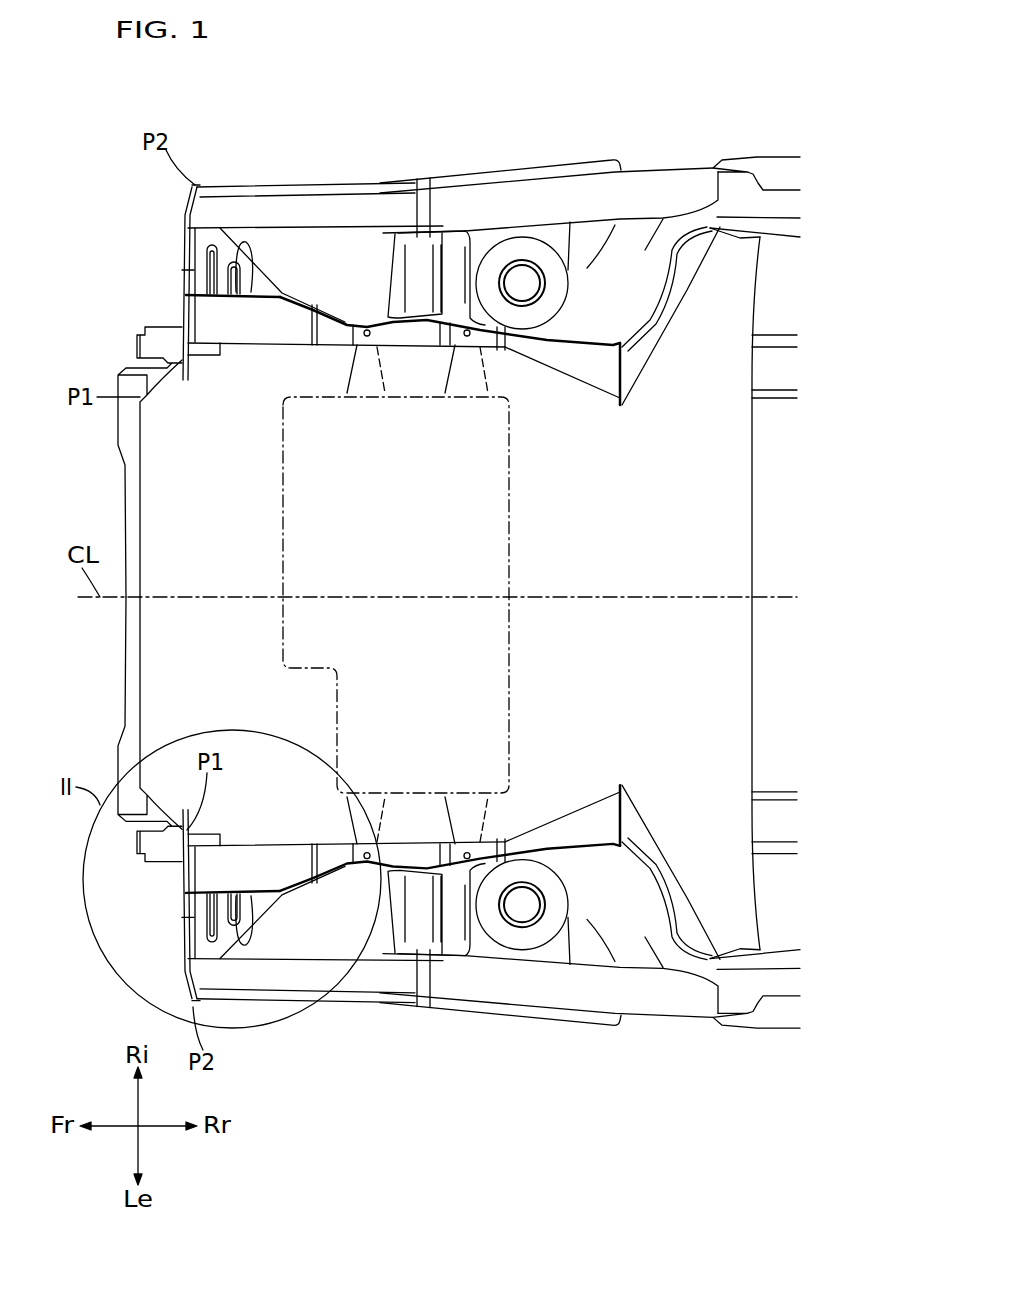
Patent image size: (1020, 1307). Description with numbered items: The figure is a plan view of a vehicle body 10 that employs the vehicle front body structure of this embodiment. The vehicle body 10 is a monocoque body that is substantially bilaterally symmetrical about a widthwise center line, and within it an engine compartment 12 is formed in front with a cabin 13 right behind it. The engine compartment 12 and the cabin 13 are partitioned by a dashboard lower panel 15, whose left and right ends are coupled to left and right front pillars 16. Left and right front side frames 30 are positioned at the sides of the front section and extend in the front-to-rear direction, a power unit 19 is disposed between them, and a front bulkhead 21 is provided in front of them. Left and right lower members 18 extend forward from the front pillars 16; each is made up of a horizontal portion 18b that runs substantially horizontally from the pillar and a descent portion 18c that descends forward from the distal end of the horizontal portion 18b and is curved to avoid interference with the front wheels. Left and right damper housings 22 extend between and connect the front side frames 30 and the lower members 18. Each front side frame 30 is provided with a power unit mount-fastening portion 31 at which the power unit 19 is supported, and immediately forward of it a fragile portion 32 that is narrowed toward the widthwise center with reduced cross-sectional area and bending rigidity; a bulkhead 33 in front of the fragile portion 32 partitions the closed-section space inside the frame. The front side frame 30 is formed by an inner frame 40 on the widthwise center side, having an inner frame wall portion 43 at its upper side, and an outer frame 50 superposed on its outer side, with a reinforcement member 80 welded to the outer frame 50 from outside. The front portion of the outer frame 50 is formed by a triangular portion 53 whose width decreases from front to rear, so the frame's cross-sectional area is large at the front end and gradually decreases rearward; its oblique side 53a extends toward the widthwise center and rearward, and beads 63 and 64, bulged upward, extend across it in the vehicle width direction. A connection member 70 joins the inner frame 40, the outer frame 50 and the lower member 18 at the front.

The vehicle body 10 is at (137, 113).
The engine compartment 12 is at (587, 685).
The cabin 13 is at (815, 685).
The dashboard lower panel 15 is at (752, 485).
The front pillar 16 is at (784, 176).
The lower member 18 is at (528, 100).
The horizontal portion 18b is at (463, 180).
The descent portion 18c is at (413, 180).
The power unit 19 is at (509, 485).
The front bulkhead 21 is at (118, 427).
The damper housing 22 is at (668, 218).
The front side frame 30 is at (297, 100).
The power unit mount-fastening portion 31 is at (377, 320).
The fragile portion 32 is at (352, 345).
The bulkhead 33 is at (315, 340).
The inner frame 40 is at (253, 297).
The inner frame wall portion 43 is at (288, 338).
The outer frame 50 is at (205, 228).
The triangular portion 53 is at (190, 270).
The oblique side 53a is at (247, 305).
The bead 63 is at (205, 258).
The bead 64 is at (225, 298).
The connection member 70 is at (185, 215).
The reinforcement member 80 is at (291, 282).